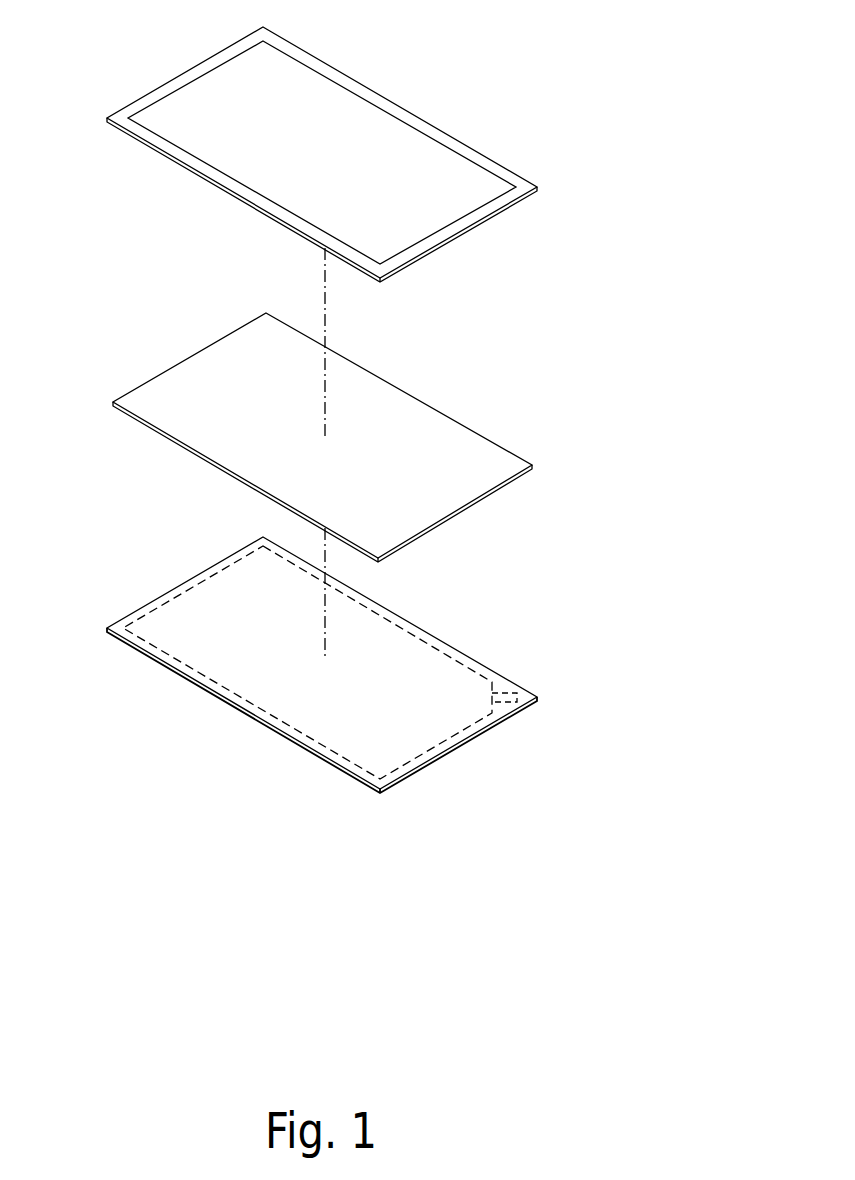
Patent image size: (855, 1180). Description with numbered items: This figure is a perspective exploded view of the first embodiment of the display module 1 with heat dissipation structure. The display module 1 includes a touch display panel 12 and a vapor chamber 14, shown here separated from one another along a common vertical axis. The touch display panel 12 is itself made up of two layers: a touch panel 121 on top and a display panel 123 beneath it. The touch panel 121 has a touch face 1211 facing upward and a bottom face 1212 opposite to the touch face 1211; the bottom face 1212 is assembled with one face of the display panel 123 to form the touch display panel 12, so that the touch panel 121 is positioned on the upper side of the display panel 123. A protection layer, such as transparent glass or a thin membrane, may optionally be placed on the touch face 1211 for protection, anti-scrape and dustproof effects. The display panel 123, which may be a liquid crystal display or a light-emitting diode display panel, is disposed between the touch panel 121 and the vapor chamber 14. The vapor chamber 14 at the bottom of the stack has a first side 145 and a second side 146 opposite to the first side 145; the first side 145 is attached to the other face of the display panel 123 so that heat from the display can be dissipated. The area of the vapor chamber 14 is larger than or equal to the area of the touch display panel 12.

The display module 1 is at (592, 320).
The touch display panel 12 is at (97, 783).
The touch panel 121 is at (362, 154).
The touch face 1211 is at (170, 113).
The bottom face 1212 is at (122, 130).
The display panel 123 is at (408, 422).
The vapor chamber 14 is at (387, 695).
The first side 145 is at (470, 672).
The second side 146 is at (460, 743).